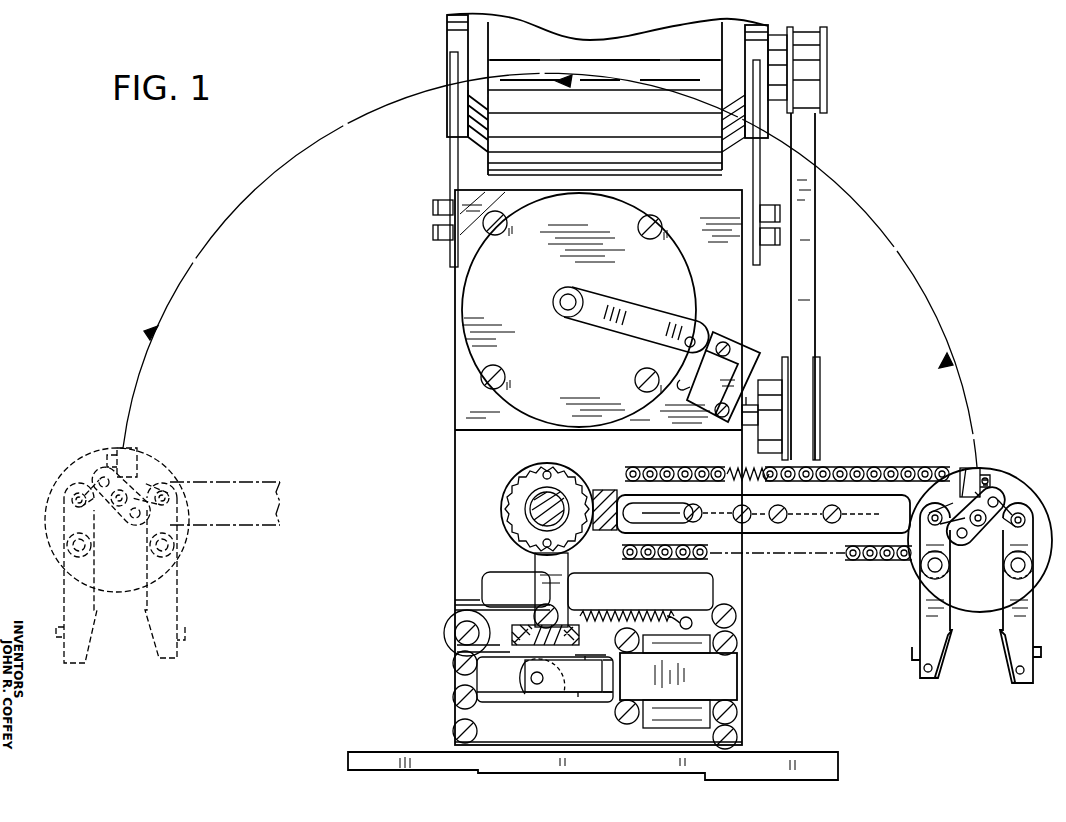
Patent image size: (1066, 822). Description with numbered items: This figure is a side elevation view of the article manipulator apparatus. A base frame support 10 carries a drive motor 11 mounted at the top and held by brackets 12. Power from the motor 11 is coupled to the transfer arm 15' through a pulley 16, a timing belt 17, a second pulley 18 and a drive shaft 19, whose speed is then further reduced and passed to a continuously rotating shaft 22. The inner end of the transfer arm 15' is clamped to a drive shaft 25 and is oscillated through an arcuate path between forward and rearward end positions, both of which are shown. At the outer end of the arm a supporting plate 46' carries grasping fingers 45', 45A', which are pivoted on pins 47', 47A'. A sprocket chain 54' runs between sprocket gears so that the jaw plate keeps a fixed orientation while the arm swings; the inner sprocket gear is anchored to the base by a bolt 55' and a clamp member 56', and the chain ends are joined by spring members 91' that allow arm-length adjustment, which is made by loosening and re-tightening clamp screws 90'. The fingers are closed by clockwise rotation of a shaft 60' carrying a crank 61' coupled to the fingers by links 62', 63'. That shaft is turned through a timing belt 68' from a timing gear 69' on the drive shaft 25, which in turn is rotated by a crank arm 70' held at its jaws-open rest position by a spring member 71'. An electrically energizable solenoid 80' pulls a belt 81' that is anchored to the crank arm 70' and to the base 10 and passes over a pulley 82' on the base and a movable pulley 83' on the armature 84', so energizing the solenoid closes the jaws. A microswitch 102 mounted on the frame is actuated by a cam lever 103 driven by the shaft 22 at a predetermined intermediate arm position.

The base frame support 10 is at (378, 751).
The drive motor 11 is at (612, 47).
The brackets 12 is at (450, 164).
The pulley 16 is at (830, 107).
The timing belt 17 is at (815, 144).
The pulley 18 is at (820, 364).
The drive shaft 19 is at (752, 402).
The shaft 22 is at (554, 299).
The drive shaft 25 is at (528, 509).
The microswitch 102 is at (716, 333).
The cam lever 103 is at (692, 334).
The transfer arm 15' is at (553, 481).
The grasping finger 45' is at (515, 591).
The grasping finger 45A' is at (548, 596).
The supporting plate 46' is at (548, 516).
The pin 47' is at (478, 553).
The pin 47A' is at (591, 576).
The sprocket chain 54' is at (786, 494).
The bolt 55' is at (564, 613).
The clamp member 56' is at (563, 675).
The shaft 60' is at (548, 525).
The crank 61' is at (1003, 461).
The link 62' is at (504, 480).
The link 63' is at (559, 488).
The timing belt 68' is at (561, 493).
The timing gear 69' is at (538, 499).
The crank arm 70' is at (524, 583).
The spring member 71' is at (640, 601).
The solenoid 80' is at (694, 676).
The belt 81' is at (597, 657).
The pulley 82' is at (447, 637).
The movable pulley 83' is at (533, 694).
The armature 84' is at (590, 692).
The clamp screws 90' is at (769, 508).
The spring members 91' is at (738, 470).